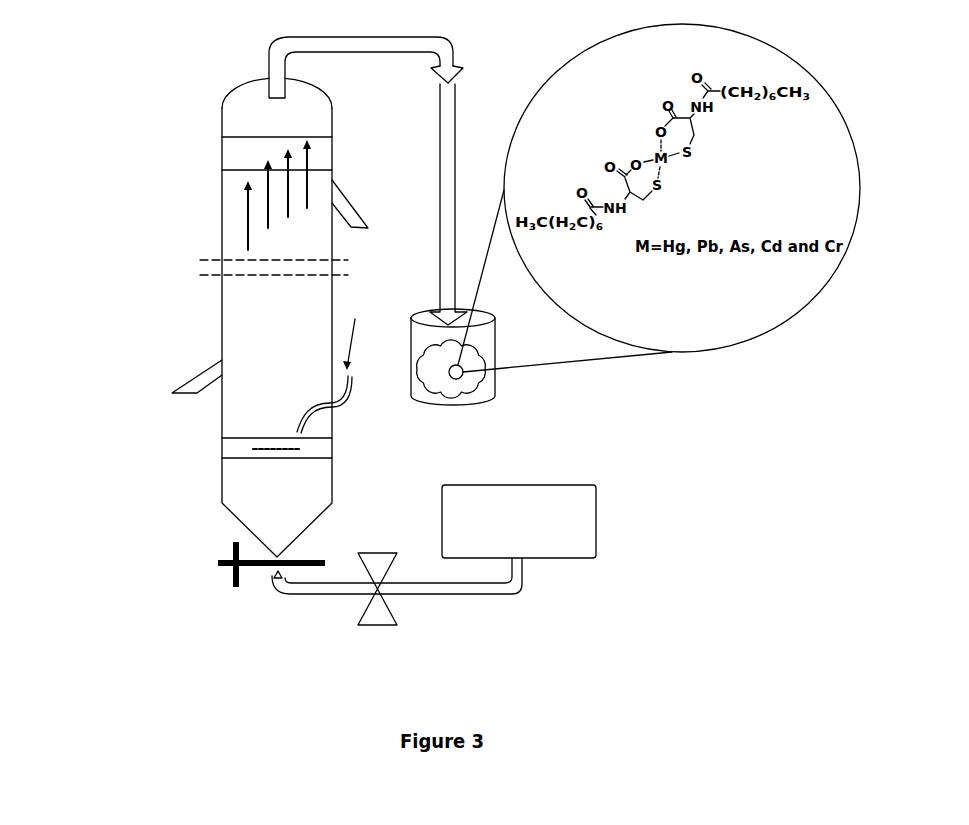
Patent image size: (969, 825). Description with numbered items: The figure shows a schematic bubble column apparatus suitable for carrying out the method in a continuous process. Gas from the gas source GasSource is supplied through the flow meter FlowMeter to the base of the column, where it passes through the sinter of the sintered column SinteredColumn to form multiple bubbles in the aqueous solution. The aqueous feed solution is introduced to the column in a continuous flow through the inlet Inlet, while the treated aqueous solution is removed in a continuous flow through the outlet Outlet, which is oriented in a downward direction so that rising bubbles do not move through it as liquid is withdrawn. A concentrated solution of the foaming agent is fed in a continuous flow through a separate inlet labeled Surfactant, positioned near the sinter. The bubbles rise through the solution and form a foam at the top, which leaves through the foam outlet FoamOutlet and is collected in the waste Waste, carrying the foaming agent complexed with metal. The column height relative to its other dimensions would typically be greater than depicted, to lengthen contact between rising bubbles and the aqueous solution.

The foam outlet FoamOutlet is at (368, 181).
The inlet Inlet is at (360, 218).
The outlet Outlet is at (185, 391).
The surfactant inlet Surfactant is at (362, 359).
The sinter SinteredColumn is at (198, 449).
The flow meter FlowMeter is at (382, 603).
The gas source GasSource is at (519, 521).
The waste Waste is at (480, 357).